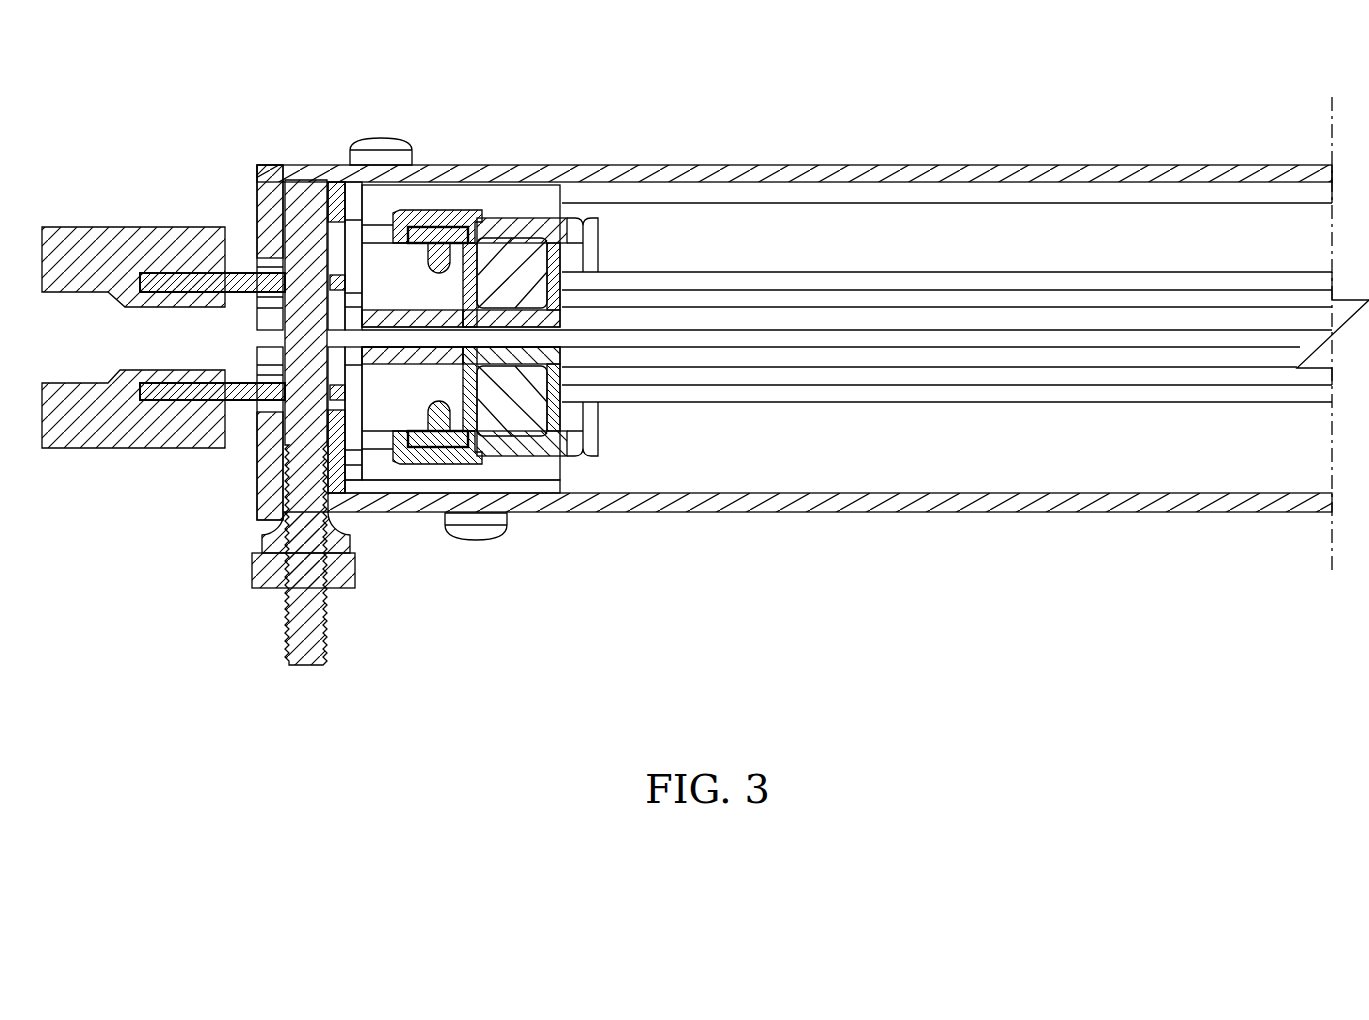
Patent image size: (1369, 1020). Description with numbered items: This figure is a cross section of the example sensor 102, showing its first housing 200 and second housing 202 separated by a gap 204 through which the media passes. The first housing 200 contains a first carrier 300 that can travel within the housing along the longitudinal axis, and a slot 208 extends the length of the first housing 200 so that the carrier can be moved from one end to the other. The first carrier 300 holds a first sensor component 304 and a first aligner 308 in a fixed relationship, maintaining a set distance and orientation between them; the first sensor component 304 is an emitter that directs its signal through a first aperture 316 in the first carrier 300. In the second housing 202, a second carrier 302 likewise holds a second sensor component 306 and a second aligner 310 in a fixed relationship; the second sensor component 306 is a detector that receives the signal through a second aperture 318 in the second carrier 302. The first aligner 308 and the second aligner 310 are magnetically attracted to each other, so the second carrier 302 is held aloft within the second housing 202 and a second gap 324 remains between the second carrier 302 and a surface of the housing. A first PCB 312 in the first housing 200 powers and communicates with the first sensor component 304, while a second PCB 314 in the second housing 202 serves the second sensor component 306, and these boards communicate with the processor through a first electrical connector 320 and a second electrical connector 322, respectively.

The sensor 102 is at (1086, 130).
The first housing 200 is at (948, 225).
The second housing 202 is at (1038, 437).
The gap 204 is at (1162, 340).
The slot 208 is at (1203, 192).
The first carrier 300 is at (538, 200).
The second carrier 302 is at (517, 470).
The first sensor component 304 is at (443, 253).
The second sensor component 306 is at (433, 443).
The first aligner 308 is at (533, 253).
The second aligner 310 is at (537, 417).
The first printed circuit board 312 is at (793, 282).
The second printed circuit board 314 is at (860, 397).
The first aperture 316 is at (433, 318).
The second aperture 318 is at (287, 507).
The first electrical connector 320 is at (72, 228).
The second electrical connector 322 is at (65, 449).
The second gap 324 is at (403, 487).